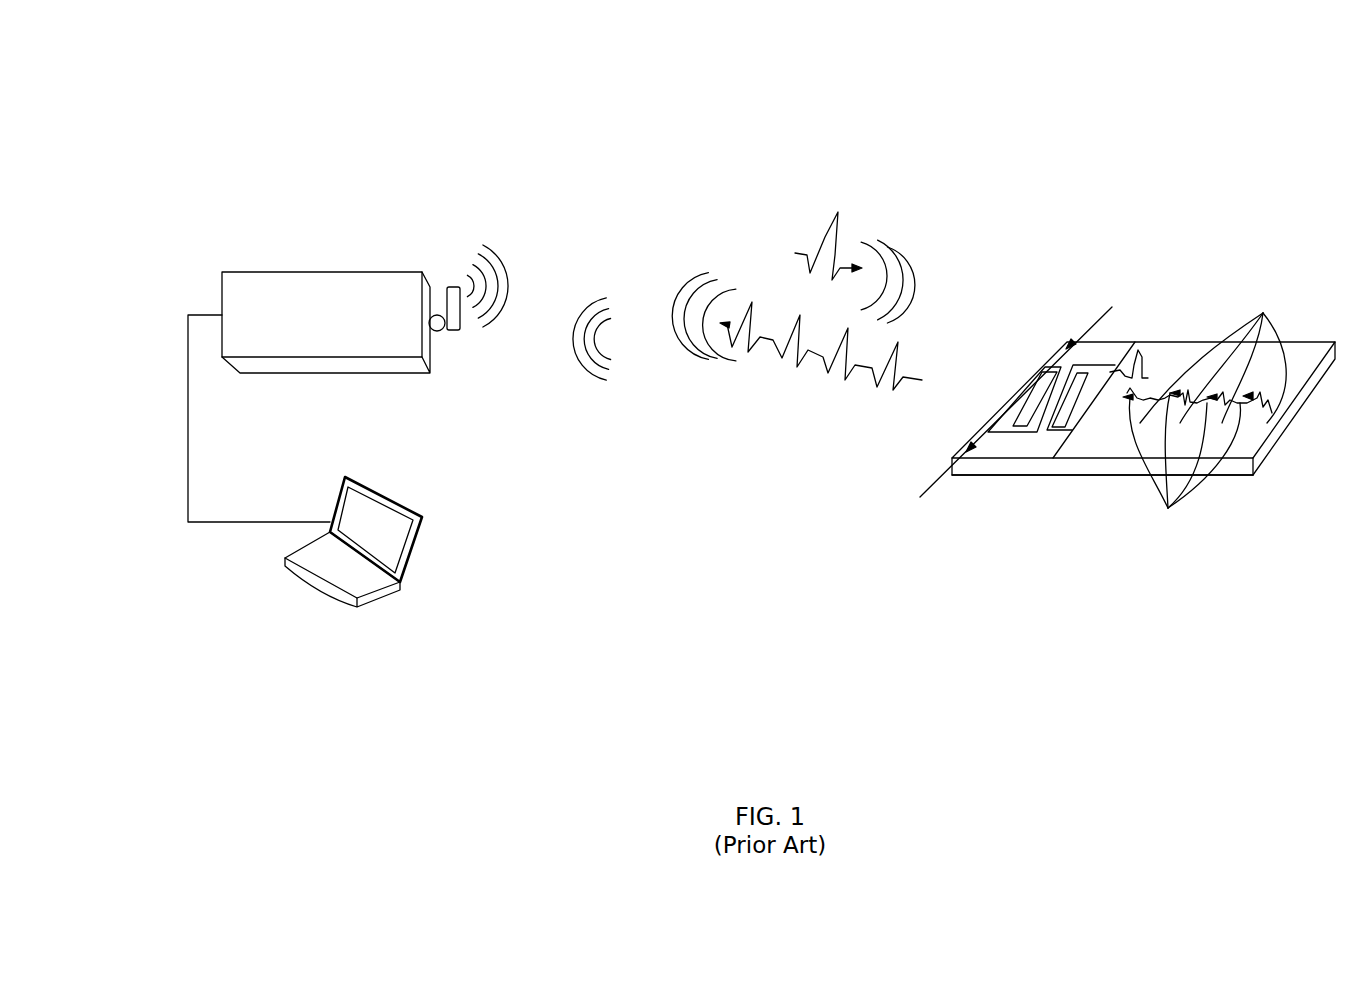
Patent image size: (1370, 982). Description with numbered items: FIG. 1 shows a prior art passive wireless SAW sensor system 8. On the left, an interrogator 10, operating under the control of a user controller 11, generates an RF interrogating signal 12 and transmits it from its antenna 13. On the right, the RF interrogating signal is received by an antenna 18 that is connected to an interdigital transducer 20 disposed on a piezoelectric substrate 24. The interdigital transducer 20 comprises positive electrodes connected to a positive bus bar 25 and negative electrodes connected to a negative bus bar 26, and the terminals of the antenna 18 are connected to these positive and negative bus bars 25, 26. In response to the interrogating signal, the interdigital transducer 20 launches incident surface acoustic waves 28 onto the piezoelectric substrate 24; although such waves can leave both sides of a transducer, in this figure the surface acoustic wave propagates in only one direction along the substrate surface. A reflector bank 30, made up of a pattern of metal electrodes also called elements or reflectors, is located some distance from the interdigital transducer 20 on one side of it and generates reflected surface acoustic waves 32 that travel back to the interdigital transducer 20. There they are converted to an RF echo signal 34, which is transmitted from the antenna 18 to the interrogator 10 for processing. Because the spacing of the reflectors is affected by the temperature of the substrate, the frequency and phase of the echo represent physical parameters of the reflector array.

The SAW sensor system 8 is at (505, 112).
The interrogator 10 is at (322, 271).
The user controller 11 is at (423, 505).
The RF interrogating signal 12 is at (522, 276).
The antenna 13 is at (455, 284).
The antenna 18 is at (1085, 323).
The interdigital transducer 20 is at (1068, 430).
The piezoelectric substrate 24 is at (1293, 341).
The positive bus bar 25 is at (1110, 342).
The negative bus bar 26 is at (1003, 460).
The incident surface acoustic waves 28 is at (1150, 368).
The reflector bank 30 is at (1213, 353).
The reflected surface acoustic waves 32 is at (1197, 462).
The RF echo signal 34 is at (629, 372).